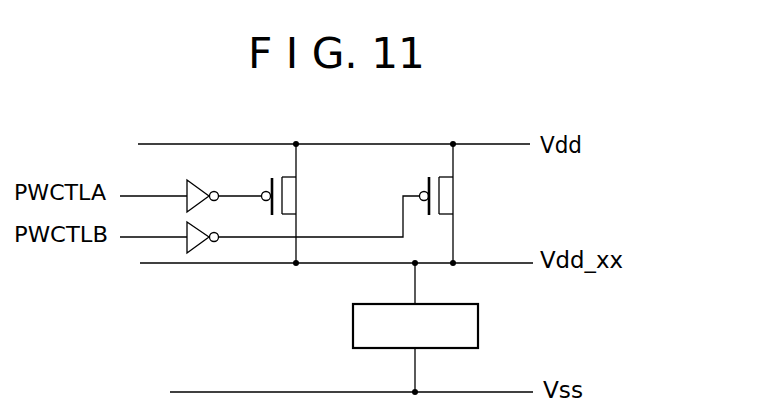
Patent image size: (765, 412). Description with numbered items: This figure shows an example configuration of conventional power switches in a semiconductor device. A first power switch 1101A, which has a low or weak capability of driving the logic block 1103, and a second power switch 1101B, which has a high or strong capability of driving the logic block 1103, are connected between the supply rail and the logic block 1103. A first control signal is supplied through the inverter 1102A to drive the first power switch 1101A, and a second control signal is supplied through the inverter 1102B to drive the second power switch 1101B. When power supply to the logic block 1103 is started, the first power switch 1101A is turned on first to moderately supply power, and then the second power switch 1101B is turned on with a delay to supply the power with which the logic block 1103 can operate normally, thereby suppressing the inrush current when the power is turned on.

The first power switch 1101A is at (295, 192).
The second power switch 1101B is at (452, 192).
The inverter 1102A is at (197, 182).
The inverter 1102B is at (208, 243).
The logic block 1103 is at (478, 323).